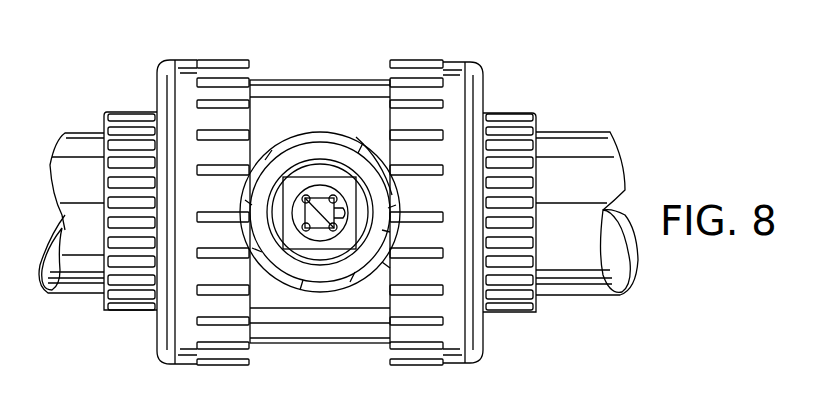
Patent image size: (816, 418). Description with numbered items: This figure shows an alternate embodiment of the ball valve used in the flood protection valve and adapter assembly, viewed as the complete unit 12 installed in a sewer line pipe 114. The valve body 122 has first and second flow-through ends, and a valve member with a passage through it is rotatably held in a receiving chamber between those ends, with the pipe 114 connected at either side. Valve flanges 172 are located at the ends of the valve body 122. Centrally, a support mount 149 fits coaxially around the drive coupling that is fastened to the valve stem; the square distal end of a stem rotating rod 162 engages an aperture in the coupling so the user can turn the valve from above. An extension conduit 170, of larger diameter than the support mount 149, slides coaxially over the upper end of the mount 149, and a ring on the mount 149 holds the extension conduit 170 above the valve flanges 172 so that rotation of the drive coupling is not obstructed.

The coupling assembly 12 is at (514, 84).
The sewer line pipe 114 is at (82, 140).
The valve body 122 is at (310, 103).
The support mount 149 is at (336, 286).
The stem rotating rod 162 is at (319, 220).
The extension conduit 170 is at (362, 286).
The valve flanges 172 is at (183, 95).